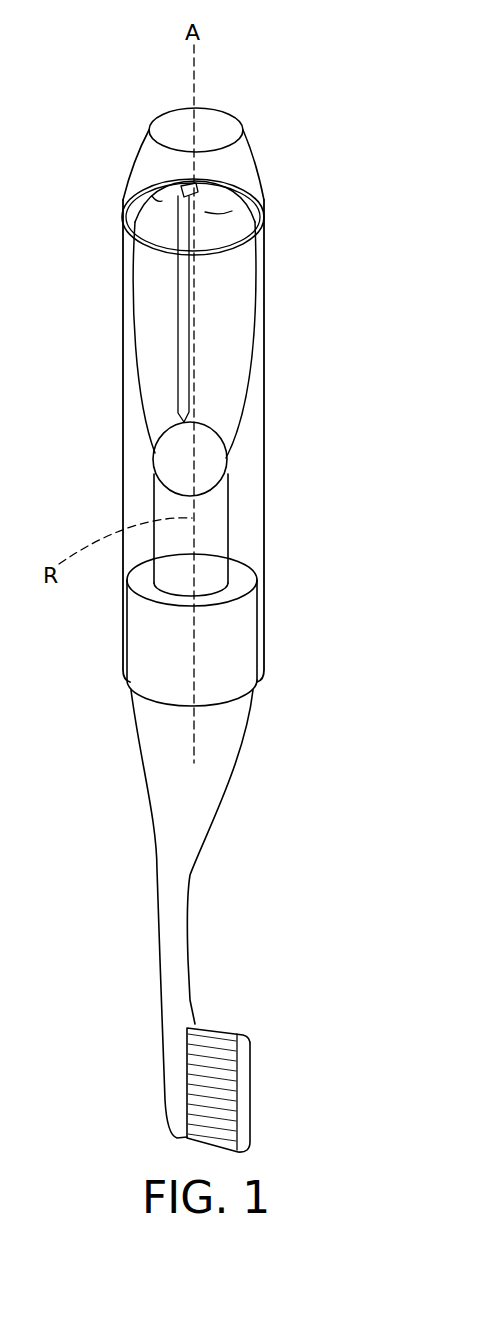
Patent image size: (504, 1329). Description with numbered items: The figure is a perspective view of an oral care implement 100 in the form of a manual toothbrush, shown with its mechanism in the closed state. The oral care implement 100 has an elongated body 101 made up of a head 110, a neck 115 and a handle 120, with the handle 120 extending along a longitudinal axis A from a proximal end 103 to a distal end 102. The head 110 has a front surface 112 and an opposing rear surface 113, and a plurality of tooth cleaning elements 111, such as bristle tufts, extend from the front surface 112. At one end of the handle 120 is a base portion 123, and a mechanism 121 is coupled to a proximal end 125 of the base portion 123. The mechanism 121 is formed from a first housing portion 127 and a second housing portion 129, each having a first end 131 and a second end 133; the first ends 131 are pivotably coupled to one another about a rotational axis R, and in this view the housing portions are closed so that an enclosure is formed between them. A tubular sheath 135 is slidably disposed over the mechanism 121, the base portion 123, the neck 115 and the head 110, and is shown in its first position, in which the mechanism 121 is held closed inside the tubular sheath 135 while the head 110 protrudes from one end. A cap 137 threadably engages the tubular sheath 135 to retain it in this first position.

The oral care implement 100 is at (70, 722).
The elongated body 101 is at (250, 720).
The distal end 102 is at (257, 700).
The proximal end 103 is at (248, 143).
The head 110 is at (158, 1090).
The tooth cleaning elements 111 is at (242, 1060).
The front surface 112 is at (197, 1022).
The rear surface 113 is at (160, 1032).
The neck 115 is at (187, 902).
The handle 120 is at (264, 542).
The mechanism 121 is at (255, 290).
The base portion 123 is at (230, 508).
The proximal end of base portion 125 is at (230, 492).
The first housing portion 127 is at (233, 347).
The second housing portion 129 is at (152, 285).
The first end 131 is at (230, 458).
The second end 133 is at (225, 200).
The tubular sheath 135 is at (264, 398).
The cap 137 is at (215, 108).